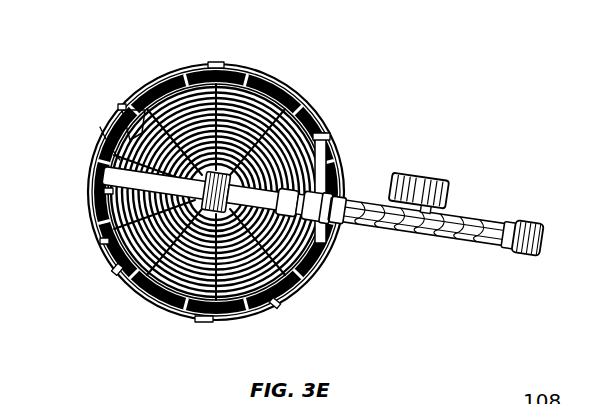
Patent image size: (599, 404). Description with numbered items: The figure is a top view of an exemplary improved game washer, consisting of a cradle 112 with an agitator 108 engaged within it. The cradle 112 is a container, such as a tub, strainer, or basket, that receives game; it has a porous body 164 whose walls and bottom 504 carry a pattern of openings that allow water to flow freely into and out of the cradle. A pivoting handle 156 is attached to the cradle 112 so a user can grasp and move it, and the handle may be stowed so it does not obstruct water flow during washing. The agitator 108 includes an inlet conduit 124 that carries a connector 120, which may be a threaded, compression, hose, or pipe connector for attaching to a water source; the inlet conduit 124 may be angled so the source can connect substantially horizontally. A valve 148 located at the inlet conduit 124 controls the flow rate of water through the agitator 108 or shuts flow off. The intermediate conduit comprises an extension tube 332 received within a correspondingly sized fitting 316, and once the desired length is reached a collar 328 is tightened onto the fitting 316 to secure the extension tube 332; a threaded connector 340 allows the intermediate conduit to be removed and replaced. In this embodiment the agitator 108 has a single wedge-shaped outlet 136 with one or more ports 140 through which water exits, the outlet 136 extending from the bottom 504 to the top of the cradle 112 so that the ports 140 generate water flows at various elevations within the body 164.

The cradle 112 is at (216, 45).
The collar 328 is at (186, 69).
The extension tube 332 is at (146, 84).
The bottom 504 is at (258, 65).
The handle 156 is at (325, 132).
The outlet 136 is at (115, 132).
The ports 140 is at (122, 106).
The threaded connector 340 is at (122, 270).
The body 164 is at (203, 322).
The fitting 316 is at (293, 286).
The agitator 108 is at (362, 281).
The inlet conduit 124 is at (345, 236).
The valve 148 is at (428, 178).
The connector 120 is at (533, 226).